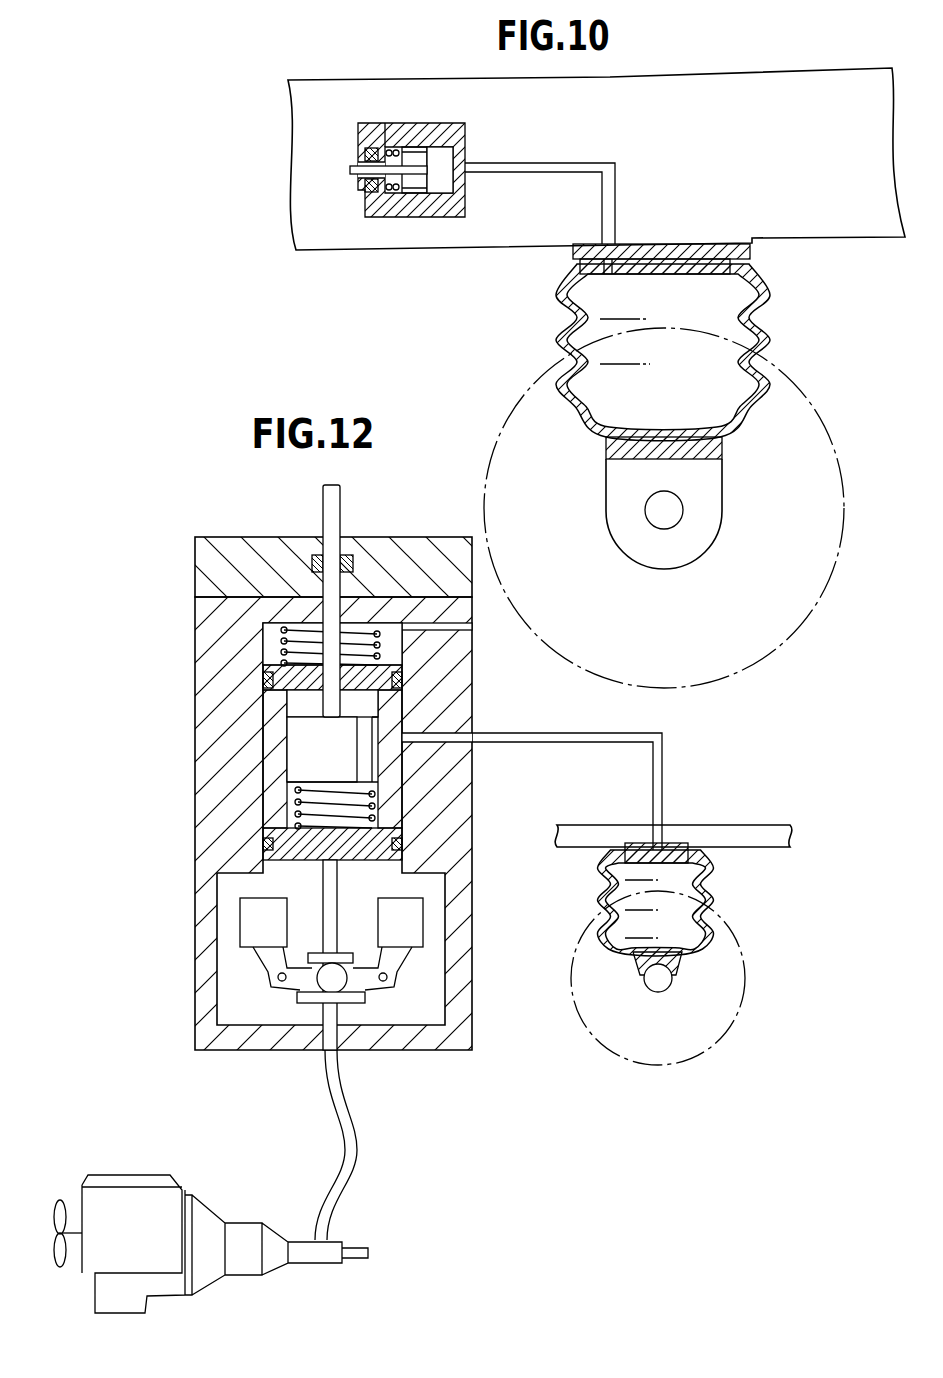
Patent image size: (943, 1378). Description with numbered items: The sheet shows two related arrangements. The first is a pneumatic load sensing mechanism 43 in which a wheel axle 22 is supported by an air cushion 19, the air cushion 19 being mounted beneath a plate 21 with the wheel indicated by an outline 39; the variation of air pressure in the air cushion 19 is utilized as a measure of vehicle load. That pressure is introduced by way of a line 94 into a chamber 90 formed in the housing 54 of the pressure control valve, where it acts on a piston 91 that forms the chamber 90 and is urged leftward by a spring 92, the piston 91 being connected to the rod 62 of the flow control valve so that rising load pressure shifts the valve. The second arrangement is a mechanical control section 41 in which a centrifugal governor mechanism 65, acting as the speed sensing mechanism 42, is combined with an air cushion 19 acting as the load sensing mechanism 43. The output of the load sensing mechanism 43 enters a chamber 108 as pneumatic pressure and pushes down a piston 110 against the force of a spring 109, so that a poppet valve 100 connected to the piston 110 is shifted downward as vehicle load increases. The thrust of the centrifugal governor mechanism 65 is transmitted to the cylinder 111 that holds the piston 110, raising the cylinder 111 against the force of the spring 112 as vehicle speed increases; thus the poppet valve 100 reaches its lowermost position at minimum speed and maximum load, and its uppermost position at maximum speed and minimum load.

In FIG. 10, the mounting plate 21 is at (730, 90).
In FIG. 10, the housing 54 is at (458, 123).
In FIG. 10, the rod 62 is at (358, 176).
In FIG. 10, the chamber 90 is at (453, 183).
In FIG. 10, the piston 91 is at (415, 193).
In FIG. 10, the spring 92 is at (392, 200).
In FIG. 10, the line 94 is at (617, 200).
In FIG. 10, the load sensing mechanism 43 is at (641, 406).
In FIG. 12, the load sensing mechanism 43 is at (597, 892).
In FIG. 10, the air cushion 19 is at (769, 396).
In FIG. 12, the air cushion 19 is at (687, 888).
In FIG. 10, the wheel axle 22 is at (668, 512).
In FIG. 10, the wheel outline 39 is at (843, 548).
In FIG. 12, the mechanical control section 41 is at (181, 902).
In FIG. 12, the poppet valve 100 is at (325, 515).
In FIG. 12, the spring 112 is at (280, 641).
In FIG. 12, the chamber 108 is at (300, 707).
In FIG. 12, the piston 110 is at (300, 748).
In FIG. 12, the spring 109 is at (300, 800).
In FIG. 12, the cylinder 111 is at (270, 822).
In FIG. 12, the centrifugal governor mechanism 65 is at (282, 988).
In FIG. 12, the speed sensing mechanism 42 is at (364, 1139).